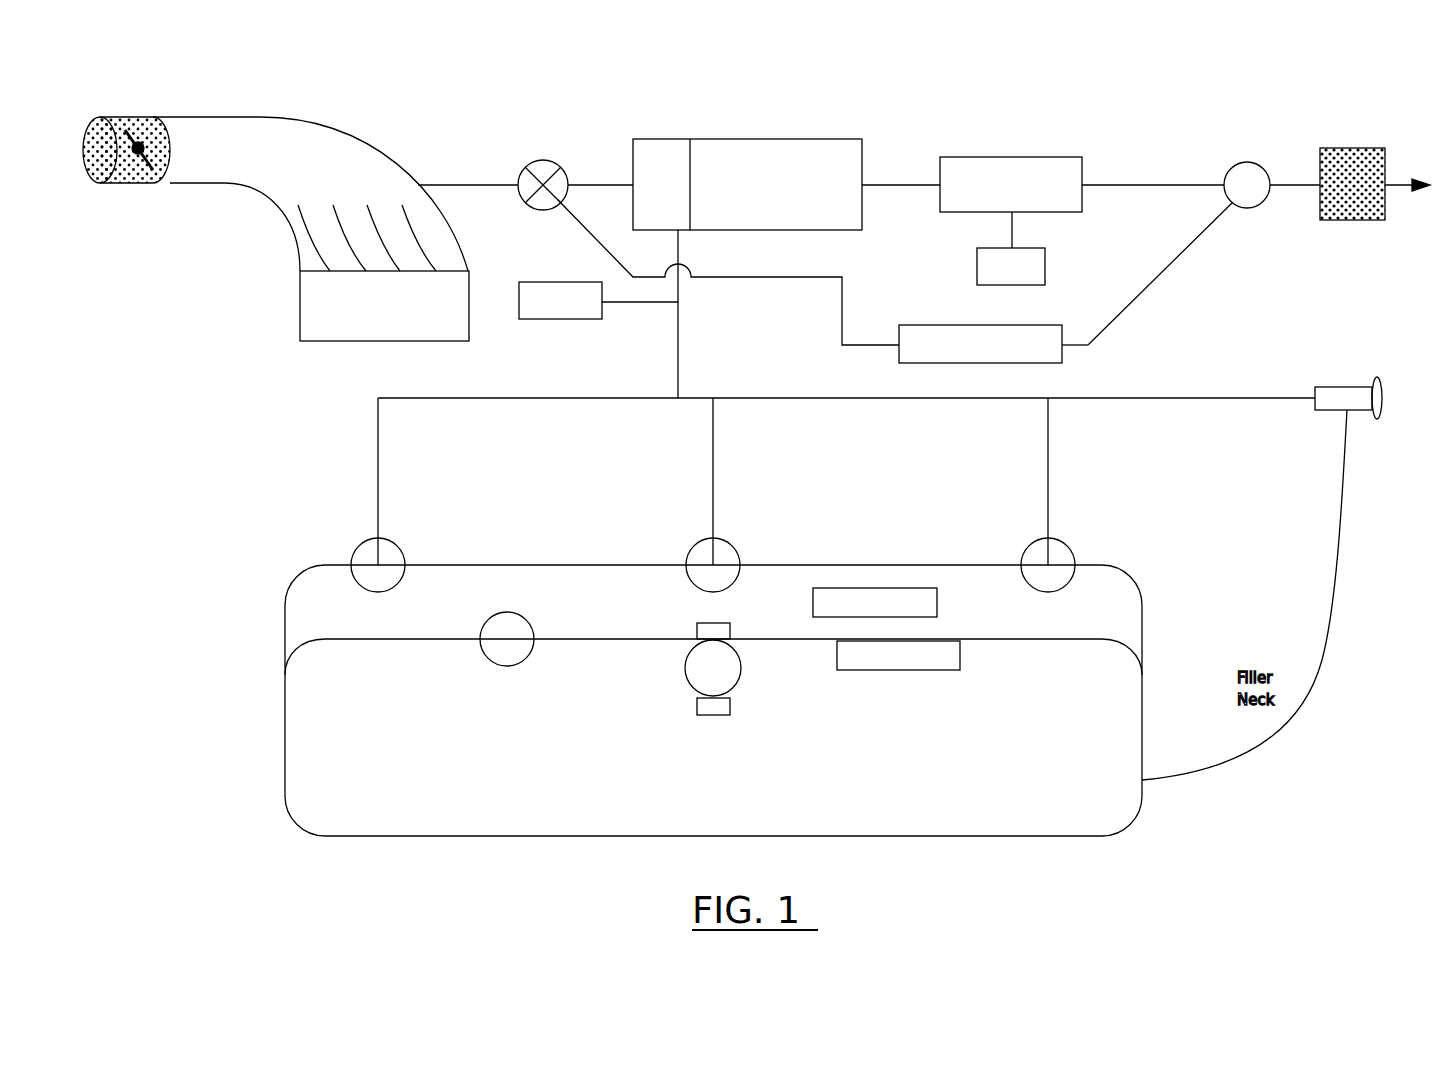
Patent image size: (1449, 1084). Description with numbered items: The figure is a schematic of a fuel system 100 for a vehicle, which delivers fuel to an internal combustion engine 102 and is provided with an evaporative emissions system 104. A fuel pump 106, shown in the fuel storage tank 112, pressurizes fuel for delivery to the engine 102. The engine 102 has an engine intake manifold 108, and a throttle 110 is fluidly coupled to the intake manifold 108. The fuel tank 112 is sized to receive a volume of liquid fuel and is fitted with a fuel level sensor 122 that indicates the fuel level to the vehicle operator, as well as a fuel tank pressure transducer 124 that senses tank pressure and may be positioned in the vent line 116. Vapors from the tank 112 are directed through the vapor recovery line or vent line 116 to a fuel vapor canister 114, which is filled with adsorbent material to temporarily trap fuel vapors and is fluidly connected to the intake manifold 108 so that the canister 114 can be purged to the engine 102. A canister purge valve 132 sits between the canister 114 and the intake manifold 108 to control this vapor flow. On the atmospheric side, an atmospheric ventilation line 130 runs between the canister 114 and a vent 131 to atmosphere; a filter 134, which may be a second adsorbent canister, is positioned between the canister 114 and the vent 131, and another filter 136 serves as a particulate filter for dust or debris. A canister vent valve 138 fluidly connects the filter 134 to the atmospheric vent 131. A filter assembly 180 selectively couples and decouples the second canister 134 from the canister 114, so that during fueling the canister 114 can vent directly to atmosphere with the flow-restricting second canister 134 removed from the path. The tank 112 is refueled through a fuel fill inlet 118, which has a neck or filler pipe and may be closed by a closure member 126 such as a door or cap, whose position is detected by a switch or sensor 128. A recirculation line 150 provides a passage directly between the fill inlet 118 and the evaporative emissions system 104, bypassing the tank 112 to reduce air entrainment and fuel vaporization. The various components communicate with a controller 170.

The fuel system 100 is at (222, 502).
The internal combustion engine 102 is at (300, 320).
The evaporative emissions system 104 is at (910, 108).
The fuel pump 106 is at (685, 672).
The engine intake manifold 108 is at (330, 123).
The throttle 110 is at (130, 118).
The fuel storage tank 112 is at (285, 745).
The fuel vapor canister 114 is at (750, 138).
The vapor recovery line 116 is at (680, 345).
The fuel fill inlet 118 is at (1318, 387).
The fuel level sensor 122 is at (503, 612).
The fuel tank pressure transducer 124 is at (523, 320).
The closure member 126 is at (1380, 378).
The switch or sensor 128 is at (1383, 398).
The atmospheric ventilation line 130 is at (1302, 181).
The vent to atmosphere 131 is at (1423, 178).
The canister purge valve 132 is at (518, 173).
The filter 134 is at (1068, 156).
The another filter 136 is at (1348, 222).
The canister vent valve 138 is at (1225, 172).
The recirculation line 150 is at (1176, 398).
The controller 170 is at (1065, 283).
The filter assembly 180 is at (1011, 248).